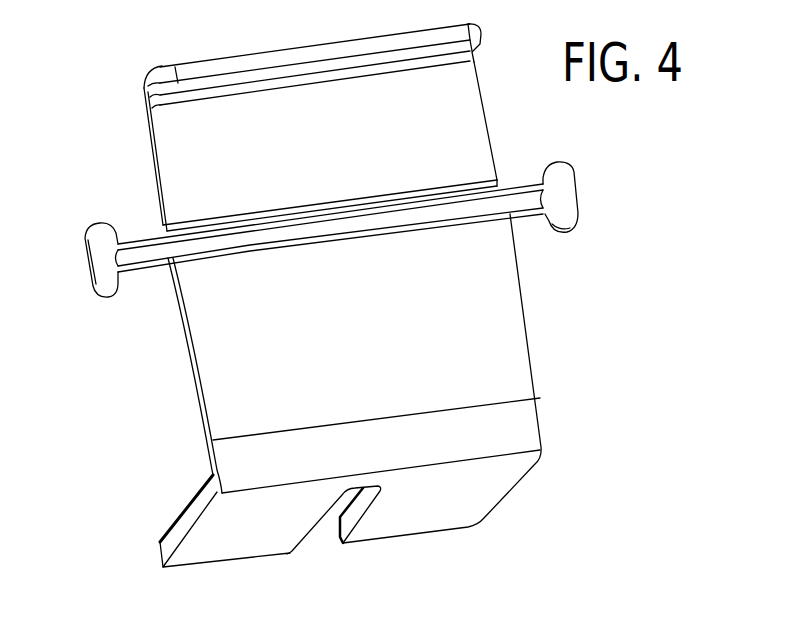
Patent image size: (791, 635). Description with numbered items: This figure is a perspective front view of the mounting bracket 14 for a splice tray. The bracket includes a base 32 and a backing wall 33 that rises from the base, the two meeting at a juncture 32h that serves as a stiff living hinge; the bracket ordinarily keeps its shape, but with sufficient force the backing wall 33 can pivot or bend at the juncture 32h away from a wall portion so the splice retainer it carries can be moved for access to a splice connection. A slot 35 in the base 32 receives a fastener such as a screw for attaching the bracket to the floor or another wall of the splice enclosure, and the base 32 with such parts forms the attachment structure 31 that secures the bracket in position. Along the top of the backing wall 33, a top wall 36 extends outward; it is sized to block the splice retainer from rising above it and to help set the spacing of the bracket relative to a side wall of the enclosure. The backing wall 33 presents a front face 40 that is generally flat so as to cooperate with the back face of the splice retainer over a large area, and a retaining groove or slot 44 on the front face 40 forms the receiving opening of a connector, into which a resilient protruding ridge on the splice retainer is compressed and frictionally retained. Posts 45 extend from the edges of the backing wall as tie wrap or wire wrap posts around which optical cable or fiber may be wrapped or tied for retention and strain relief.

The mounting bracket 14 is at (143, 86).
The top wall 36 is at (335, 43).
The front face 40 is at (468, 133).
The retaining groove or slot 44 is at (468, 207).
The posts 45 is at (582, 194).
The backing wall 33 is at (190, 347).
The juncture 32h is at (207, 477).
The base 32 is at (207, 525).
The slot 35 is at (326, 528).
The attachment structure 31 is at (259, 577).